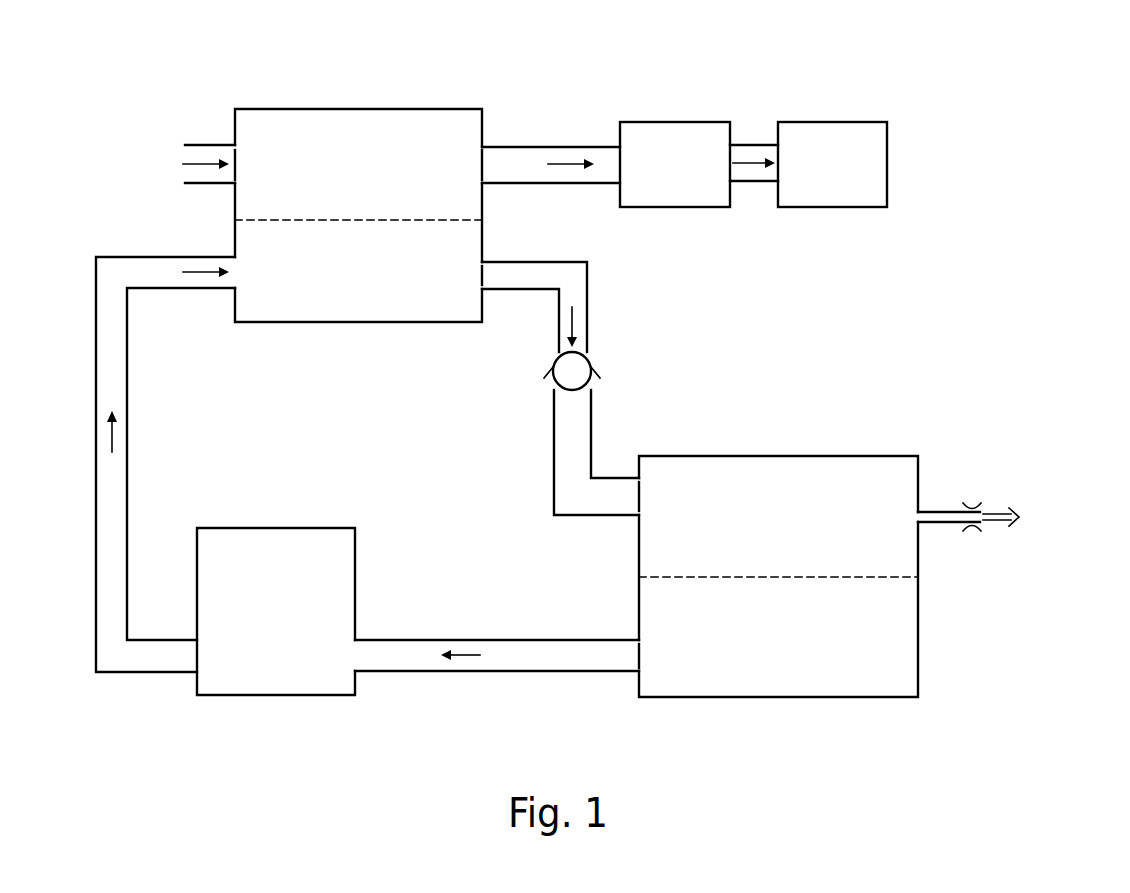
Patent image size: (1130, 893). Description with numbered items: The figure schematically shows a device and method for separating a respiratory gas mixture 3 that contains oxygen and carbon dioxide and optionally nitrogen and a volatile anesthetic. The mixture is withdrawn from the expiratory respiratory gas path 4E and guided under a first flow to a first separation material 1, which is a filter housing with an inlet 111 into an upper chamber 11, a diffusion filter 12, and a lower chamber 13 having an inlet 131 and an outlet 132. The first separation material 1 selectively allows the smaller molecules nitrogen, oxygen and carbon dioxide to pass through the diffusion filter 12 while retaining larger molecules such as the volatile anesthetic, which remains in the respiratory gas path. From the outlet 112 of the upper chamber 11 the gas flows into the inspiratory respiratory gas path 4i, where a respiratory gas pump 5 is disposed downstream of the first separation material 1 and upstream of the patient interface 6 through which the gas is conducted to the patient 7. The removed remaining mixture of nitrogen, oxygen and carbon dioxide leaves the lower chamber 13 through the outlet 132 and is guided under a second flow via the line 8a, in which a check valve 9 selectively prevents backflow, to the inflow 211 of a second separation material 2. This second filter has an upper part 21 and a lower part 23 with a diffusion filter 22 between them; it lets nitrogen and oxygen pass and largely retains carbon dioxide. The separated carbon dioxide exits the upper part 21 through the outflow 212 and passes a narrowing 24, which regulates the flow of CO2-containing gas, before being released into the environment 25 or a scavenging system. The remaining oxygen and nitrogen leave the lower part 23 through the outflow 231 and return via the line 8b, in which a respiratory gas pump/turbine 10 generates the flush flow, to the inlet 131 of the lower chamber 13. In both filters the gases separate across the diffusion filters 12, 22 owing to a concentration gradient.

The first separation material 1 is at (380, 108).
The upper chamber 11 is at (432, 122).
The diffusion filter 12 is at (440, 221).
The lower chamber 13 is at (300, 323).
The inlet 111 is at (234, 165).
The outlet 112 is at (465, 158).
The inlet into the lower chamber 131 is at (235, 272).
The outlet for respiratory gas from the lower chamber 132 is at (482, 275).
The respiratory gas mixture 3 is at (196, 145).
The expiratory respiratory gas path 4E is at (214, 145).
The inspiratory respiratory gas path 4i is at (543, 184).
The respiratory gas pump 5 is at (654, 187).
The patient interface 6 is at (757, 183).
The patient 7 is at (838, 208).
The line 8a is at (588, 330).
The line 8b is at (465, 669).
The check valve 9 is at (594, 381).
The respiratory gas pump/turbine 10 is at (278, 669).
The second separation material 2 is at (893, 455).
The upper part 21 is at (908, 570).
The diffusion filter 22 is at (874, 578).
The lower part 23 is at (908, 672).
The inflow 211 is at (636, 498).
The outflow 212 is at (925, 510).
The outflow 231 is at (637, 655).
The narrowing 24 is at (970, 503).
The environment 25 is at (1040, 510).